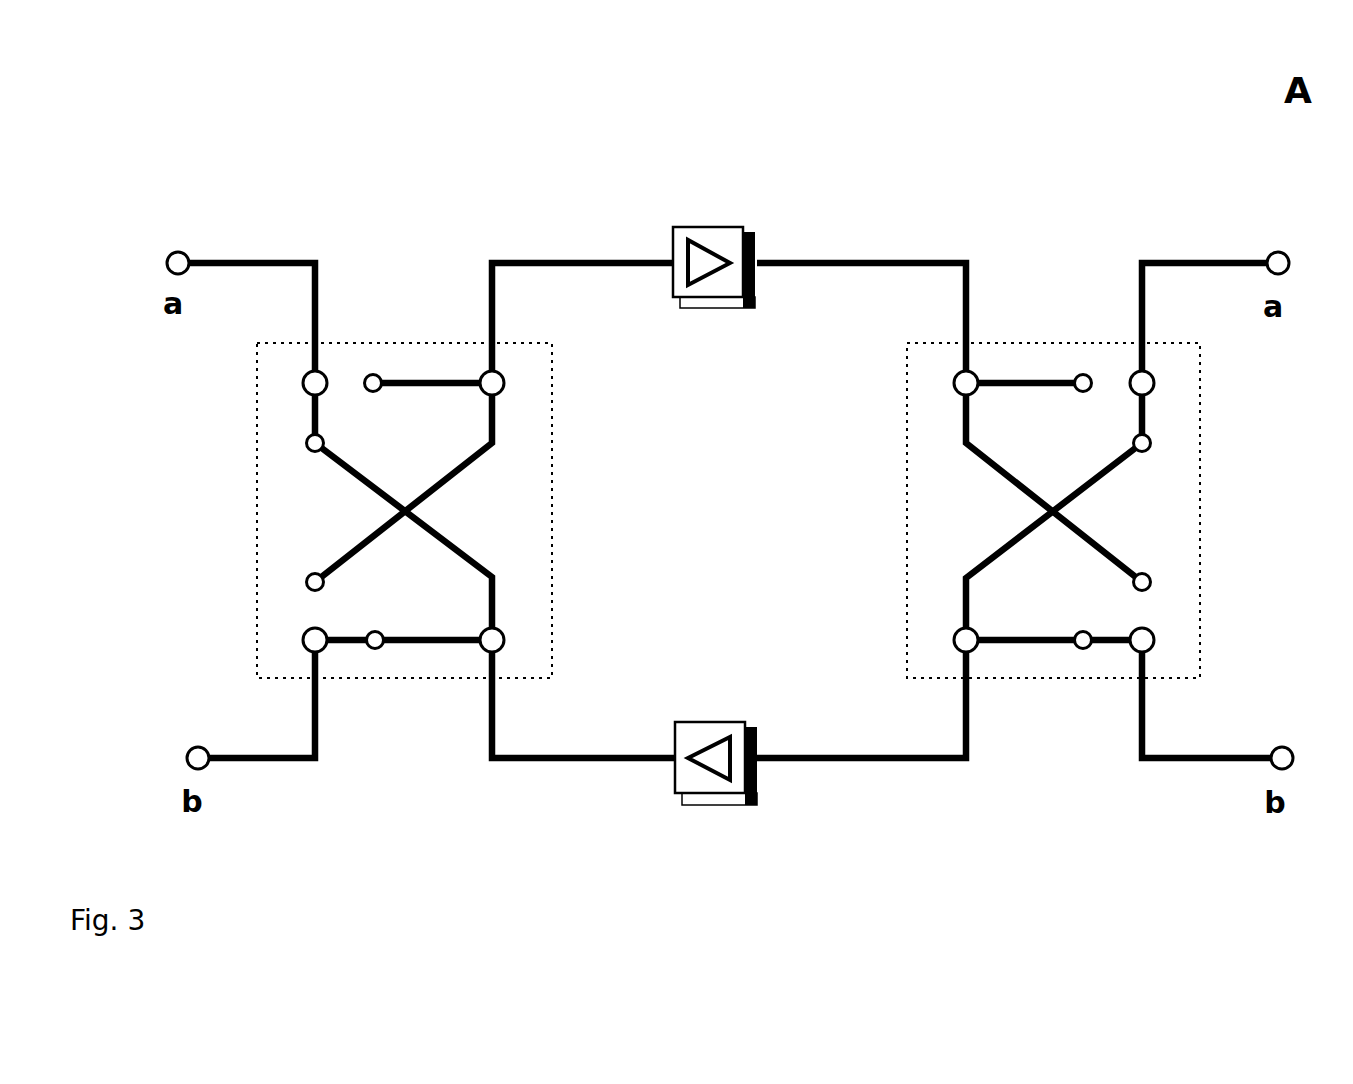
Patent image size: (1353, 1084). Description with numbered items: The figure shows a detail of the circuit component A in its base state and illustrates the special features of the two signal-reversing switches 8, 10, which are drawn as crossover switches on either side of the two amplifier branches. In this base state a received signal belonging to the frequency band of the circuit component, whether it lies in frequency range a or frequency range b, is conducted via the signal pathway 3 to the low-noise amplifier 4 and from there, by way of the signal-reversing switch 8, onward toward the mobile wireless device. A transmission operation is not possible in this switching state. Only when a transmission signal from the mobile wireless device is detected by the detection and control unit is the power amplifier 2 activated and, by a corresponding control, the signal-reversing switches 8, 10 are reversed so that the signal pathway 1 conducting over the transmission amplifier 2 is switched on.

The signal pathway 1 is at (608, 258).
The power amplifier 2 is at (757, 237).
The signal pathway 3 is at (630, 762).
The low-noise amplifier 4 is at (758, 800).
The signal-reversing switch 8 is at (257, 480).
The signal-reversing switch 10 is at (1202, 502).